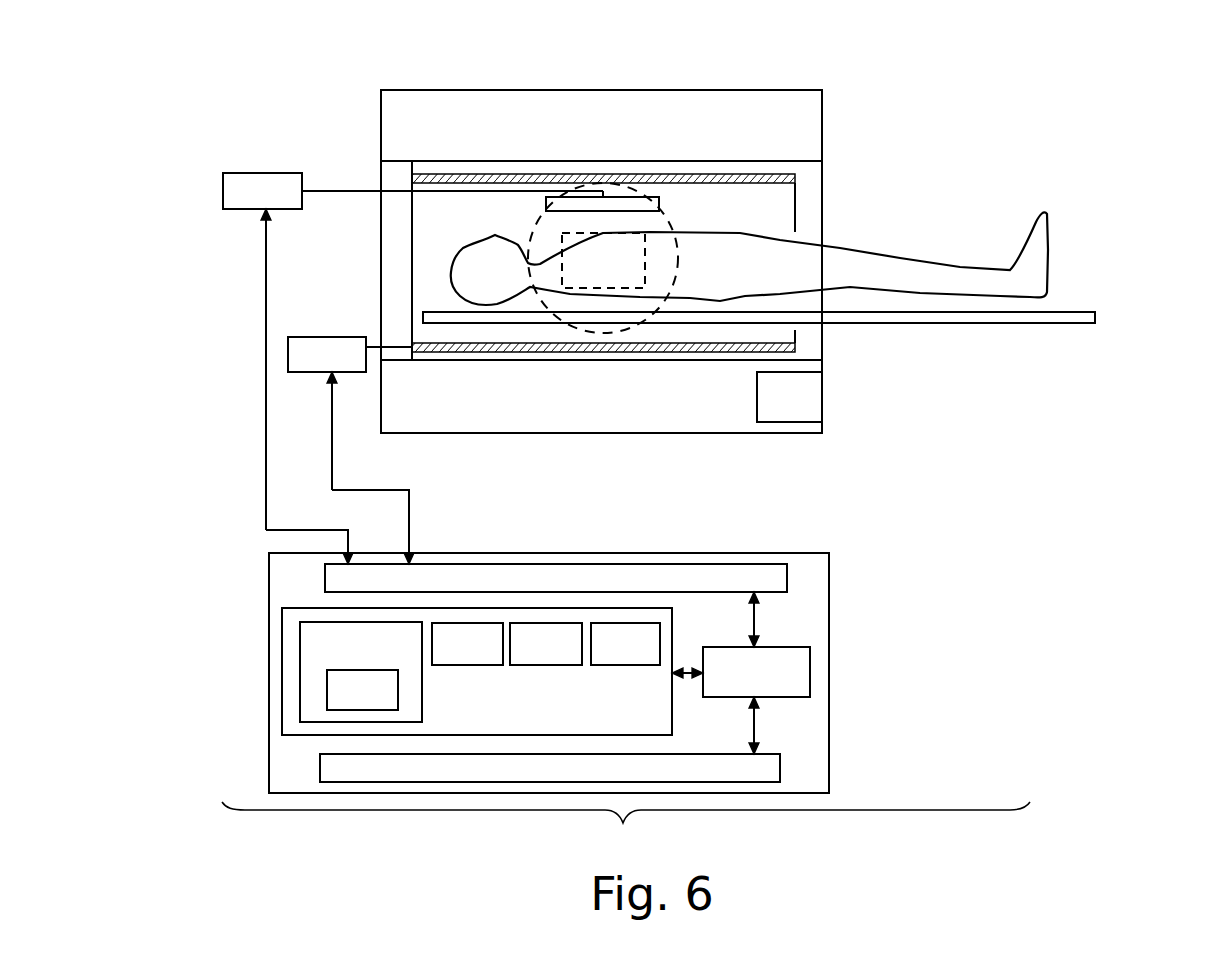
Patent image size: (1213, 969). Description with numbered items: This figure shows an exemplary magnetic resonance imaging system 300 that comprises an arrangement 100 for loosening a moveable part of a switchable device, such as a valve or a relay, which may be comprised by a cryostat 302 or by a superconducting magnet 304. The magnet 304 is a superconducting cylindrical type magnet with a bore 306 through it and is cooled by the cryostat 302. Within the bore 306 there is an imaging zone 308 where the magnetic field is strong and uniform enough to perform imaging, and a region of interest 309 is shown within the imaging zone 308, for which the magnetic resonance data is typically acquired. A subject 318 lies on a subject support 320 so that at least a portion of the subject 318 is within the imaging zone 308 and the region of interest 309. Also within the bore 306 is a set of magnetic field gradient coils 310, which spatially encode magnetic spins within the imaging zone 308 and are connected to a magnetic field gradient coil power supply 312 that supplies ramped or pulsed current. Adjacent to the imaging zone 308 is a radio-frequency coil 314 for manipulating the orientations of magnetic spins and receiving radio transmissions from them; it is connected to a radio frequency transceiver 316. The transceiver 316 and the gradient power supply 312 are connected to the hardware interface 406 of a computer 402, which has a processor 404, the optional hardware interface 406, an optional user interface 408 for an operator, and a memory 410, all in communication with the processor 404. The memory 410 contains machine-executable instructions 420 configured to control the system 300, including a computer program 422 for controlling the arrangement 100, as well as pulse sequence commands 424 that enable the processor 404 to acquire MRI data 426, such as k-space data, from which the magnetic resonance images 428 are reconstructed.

The arrangement 100 is at (822, 382).
The magnetic resonance imaging system 300 is at (626, 826).
The cryostat 302 is at (788, 89).
The superconducting magnet 304 is at (822, 120).
The bore 306 is at (763, 203).
The imaging zone 308 is at (542, 303).
The region of interest 309 is at (608, 287).
The magnetic field gradient coils 310 is at (737, 350).
The magnetic field gradient coil power supply 312 is at (351, 450).
The radio-frequency coil 314 is at (618, 203).
The radio frequency transceiver 316 is at (413, 368).
The subject 318 is at (1050, 255).
The subject support 320 is at (1015, 323).
The computer 402 is at (852, 577).
The processor 404 is at (741, 673).
The hardware interface 406 is at (556, 578).
The user interface 408 is at (550, 768).
The memory 410 is at (282, 637).
The machine-executable instructions 420 is at (361, 672).
The computer program 422 is at (362, 690).
The pulse sequence commands 424 is at (467, 644).
The MRI data 426 is at (546, 644).
The magnetic resonance images 428 is at (625, 644).